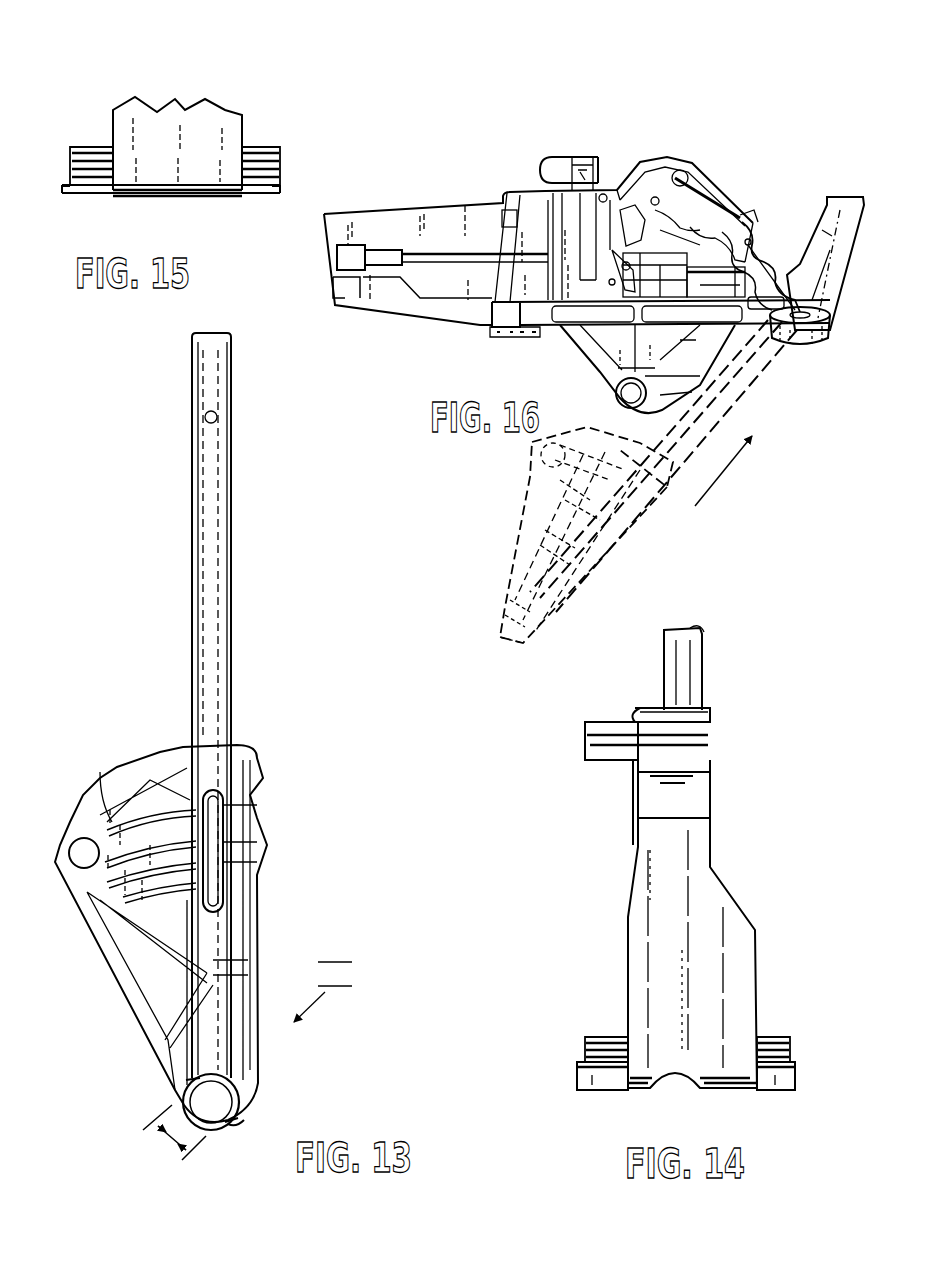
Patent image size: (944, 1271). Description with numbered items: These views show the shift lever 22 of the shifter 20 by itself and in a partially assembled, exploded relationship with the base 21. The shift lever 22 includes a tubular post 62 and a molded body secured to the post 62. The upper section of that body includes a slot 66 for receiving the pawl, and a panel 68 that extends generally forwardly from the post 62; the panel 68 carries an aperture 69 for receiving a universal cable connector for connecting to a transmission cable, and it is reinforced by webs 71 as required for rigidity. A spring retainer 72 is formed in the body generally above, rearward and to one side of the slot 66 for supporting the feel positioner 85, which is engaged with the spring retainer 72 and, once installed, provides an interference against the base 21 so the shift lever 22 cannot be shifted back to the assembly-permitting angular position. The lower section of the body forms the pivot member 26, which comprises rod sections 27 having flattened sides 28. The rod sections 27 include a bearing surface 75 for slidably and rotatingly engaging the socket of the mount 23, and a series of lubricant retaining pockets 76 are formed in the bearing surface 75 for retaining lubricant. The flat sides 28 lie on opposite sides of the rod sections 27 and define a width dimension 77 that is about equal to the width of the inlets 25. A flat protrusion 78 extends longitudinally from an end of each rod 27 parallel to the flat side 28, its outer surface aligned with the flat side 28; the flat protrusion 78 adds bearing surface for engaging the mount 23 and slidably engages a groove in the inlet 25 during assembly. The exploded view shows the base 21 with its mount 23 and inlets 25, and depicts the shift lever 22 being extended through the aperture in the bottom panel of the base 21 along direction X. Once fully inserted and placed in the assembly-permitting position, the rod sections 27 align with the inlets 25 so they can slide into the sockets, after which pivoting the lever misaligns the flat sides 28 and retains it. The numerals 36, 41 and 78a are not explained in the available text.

In FIG. 16, the shifter 20 is at (423, 177).
In FIG. 16, the base 21 is at (333, 285).
In FIG. 15, the shift lever 22 is at (104, 60).
In FIG. 16, the shift lever 22 is at (600, 579).
In FIG. 13, the shift lever 22 is at (150, 428).
In FIG. 14, the shift lever 22 is at (751, 645).
In FIG. 16, the mount 23 is at (583, 386).
In FIG. 16, the inlets 25 is at (733, 407).
In FIG. 15, the pivot member 26 is at (160, 196).
In FIG. 16, the pivot member 26 is at (492, 636).
In FIG. 14, the pivot member 26 is at (704, 1094).
In FIG. 14, the rod sections 27 is at (575, 1063).
In FIG. 15, the flattened sides 28 is at (252, 197).
In FIG. 16, the flattened sides 28 is at (500, 618).
In FIG. 13, the flattened sides 28 is at (228, 1122).
In FIG. 14, the flattened sides 28 is at (775, 1085).
In FIG. 16, the pivot 36 is at (812, 344).
In FIG. 16, the arm end 41 is at (850, 204).
In FIG. 16, the tubular post 62 is at (806, 254).
In FIG. 13, the tubular post 62 is at (192, 566).
In FIG. 13, the slot 66 is at (216, 835).
In FIG. 13, the panel 68 is at (113, 930).
In FIG. 13, the aperture 69 is at (80, 857).
In FIG. 13, the webs 71 is at (101, 772).
In FIG. 16, the spring retainer 72 is at (632, 500).
In FIG. 14, the spring retainer 72 is at (598, 726).
In FIG. 15, the bearing surface 75 is at (280, 176).
In FIG. 13, the bearing surface 75 is at (196, 1126).
In FIG. 14, the bearing surface 75 is at (778, 1037).
In FIG. 15, the lubricant retaining pockets 76 is at (280, 160).
In FIG. 14, the lubricant retaining pockets 76 is at (792, 1046).
In FIG. 13, the width dimension 77 is at (160, 1141).
In FIG. 15, the flat protrusion 78 is at (276, 197).
In FIG. 13, the flat protrusion 78 is at (240, 1116).
In FIG. 14, the flat protrusion 78 is at (796, 1083).
In FIG. 14, the lip edge 78a is at (787, 1087).
In FIG. 16, the feel positioner 85 is at (712, 190).
In FIG. 16, the direction X is at (700, 492).